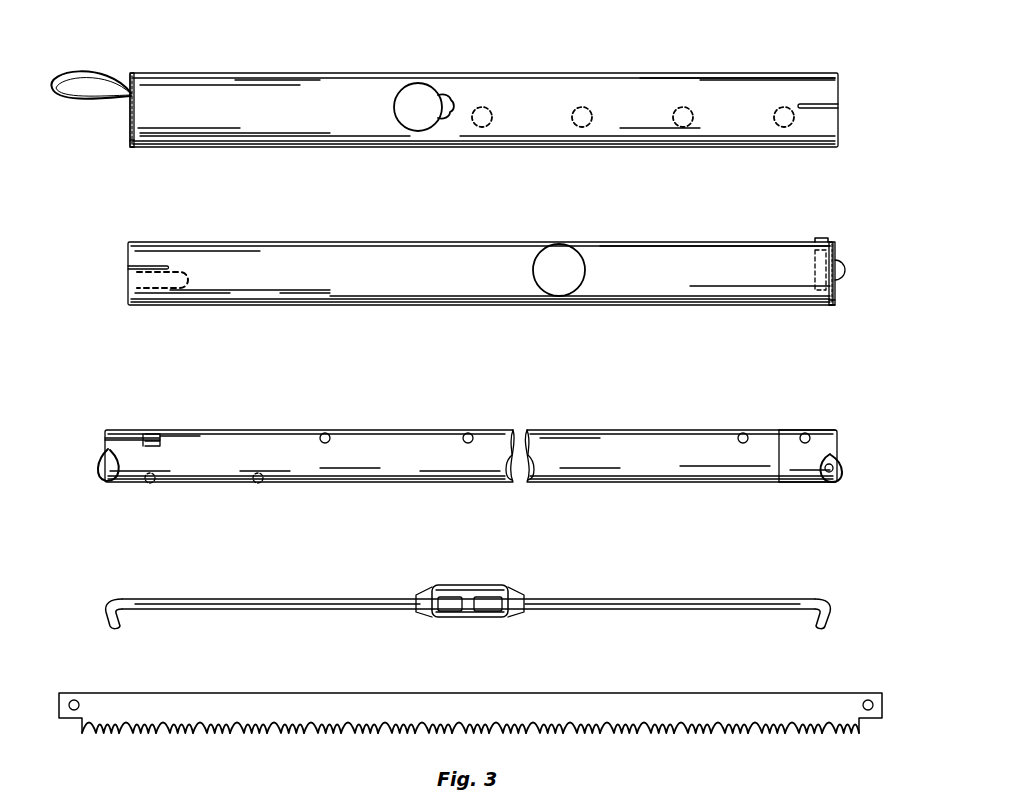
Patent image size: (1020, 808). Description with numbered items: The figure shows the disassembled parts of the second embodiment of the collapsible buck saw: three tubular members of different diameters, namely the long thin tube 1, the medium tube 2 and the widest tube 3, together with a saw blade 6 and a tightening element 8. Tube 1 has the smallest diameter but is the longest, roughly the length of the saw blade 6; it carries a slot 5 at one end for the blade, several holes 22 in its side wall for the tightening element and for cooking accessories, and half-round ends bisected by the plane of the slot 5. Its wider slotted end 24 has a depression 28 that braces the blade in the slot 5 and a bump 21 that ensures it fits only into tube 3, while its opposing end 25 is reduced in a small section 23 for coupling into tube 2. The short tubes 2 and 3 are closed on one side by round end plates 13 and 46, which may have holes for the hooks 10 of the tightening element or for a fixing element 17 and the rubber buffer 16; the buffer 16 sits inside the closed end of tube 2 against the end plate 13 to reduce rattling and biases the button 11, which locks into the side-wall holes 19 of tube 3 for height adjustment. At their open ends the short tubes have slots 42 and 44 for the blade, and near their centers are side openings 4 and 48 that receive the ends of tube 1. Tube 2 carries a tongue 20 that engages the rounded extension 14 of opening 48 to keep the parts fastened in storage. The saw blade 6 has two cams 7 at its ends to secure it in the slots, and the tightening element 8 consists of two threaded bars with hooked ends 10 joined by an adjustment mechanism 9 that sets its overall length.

The tube 1 is at (575, 430).
The tube 2 is at (480, 243).
The tube 3 is at (252, 72).
The opening 4 is at (559, 270).
The slot 5 is at (105, 438).
The saw blade 6 is at (598, 694).
The cams 7 is at (77, 702).
The tightening element 8 is at (582, 598).
The adjustment mechanism 9 is at (510, 596).
The hooks 10 is at (124, 602).
The button 11 is at (821, 240).
The end plate 13 is at (835, 292).
The rounded extension 14 is at (460, 98).
The rubber buffer 16 is at (842, 270).
The fixing element 17 is at (66, 88).
The holes 19 is at (778, 108).
The tongue 20 is at (184, 270).
The bump 21 is at (155, 480).
The holes 22 is at (466, 476).
The reduced-diameter section 23 is at (815, 444).
The slotted end 24 is at (104, 460).
The opposing end 25 is at (836, 462).
The depression 28 is at (150, 438).
The slot 42 is at (128, 267).
The slot 44 is at (838, 106).
The end plate 46 is at (129, 142).
The opening 48 is at (421, 107).